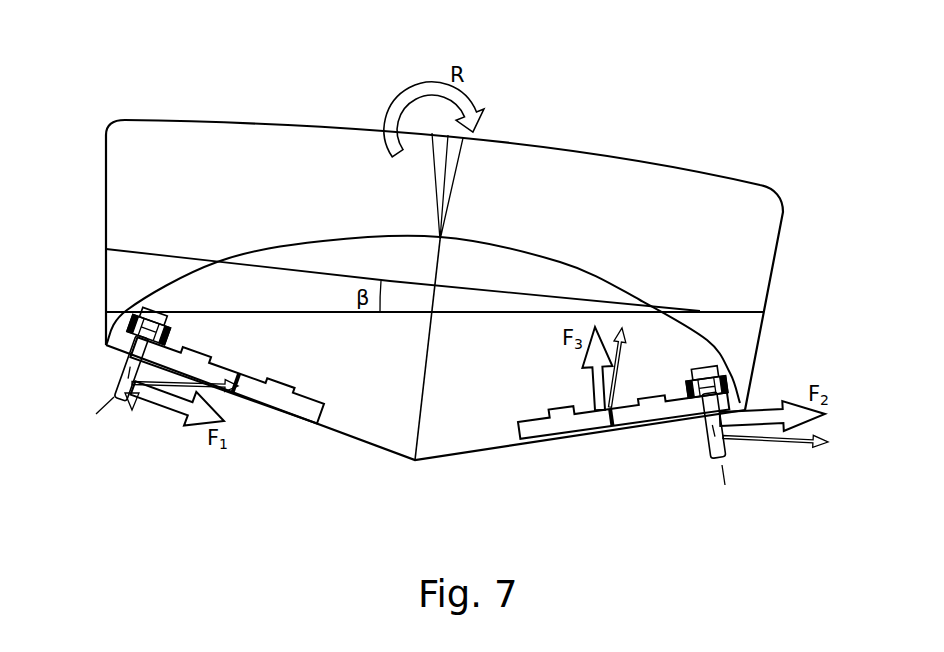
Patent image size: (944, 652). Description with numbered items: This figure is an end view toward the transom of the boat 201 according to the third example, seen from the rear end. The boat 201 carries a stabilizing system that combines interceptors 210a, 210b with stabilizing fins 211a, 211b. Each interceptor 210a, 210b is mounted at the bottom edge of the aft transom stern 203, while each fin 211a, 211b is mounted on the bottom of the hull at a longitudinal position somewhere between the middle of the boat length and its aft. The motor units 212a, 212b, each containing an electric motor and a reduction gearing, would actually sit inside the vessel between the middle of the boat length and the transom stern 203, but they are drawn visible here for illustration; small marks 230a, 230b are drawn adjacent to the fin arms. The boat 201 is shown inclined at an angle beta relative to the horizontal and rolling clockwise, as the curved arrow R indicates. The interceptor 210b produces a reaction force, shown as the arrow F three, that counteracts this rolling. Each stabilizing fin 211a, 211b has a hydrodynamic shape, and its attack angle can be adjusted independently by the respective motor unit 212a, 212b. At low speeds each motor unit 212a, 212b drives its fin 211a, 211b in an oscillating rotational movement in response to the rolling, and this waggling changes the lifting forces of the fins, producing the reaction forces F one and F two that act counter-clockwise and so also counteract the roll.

The boat 201 is at (647, 117).
The aft transom stern 203 is at (443, 447).
The interceptor 210a is at (285, 397).
The interceptor 210b is at (560, 432).
The stabilizing fin 211a is at (136, 400).
The stabilizing fin 211b is at (717, 450).
The motor unit 212a is at (138, 338).
The motor unit 212b is at (692, 398).
The first stop position 230a is at (106, 410).
The second stop position 230b is at (728, 475).